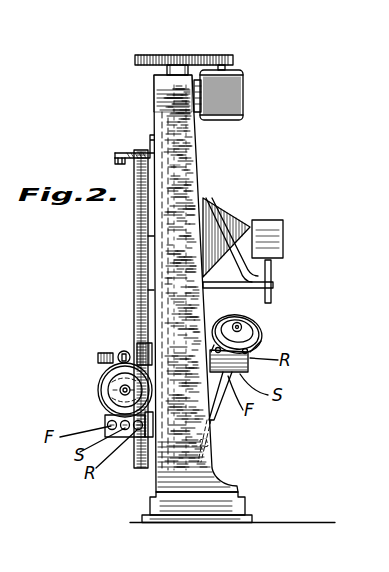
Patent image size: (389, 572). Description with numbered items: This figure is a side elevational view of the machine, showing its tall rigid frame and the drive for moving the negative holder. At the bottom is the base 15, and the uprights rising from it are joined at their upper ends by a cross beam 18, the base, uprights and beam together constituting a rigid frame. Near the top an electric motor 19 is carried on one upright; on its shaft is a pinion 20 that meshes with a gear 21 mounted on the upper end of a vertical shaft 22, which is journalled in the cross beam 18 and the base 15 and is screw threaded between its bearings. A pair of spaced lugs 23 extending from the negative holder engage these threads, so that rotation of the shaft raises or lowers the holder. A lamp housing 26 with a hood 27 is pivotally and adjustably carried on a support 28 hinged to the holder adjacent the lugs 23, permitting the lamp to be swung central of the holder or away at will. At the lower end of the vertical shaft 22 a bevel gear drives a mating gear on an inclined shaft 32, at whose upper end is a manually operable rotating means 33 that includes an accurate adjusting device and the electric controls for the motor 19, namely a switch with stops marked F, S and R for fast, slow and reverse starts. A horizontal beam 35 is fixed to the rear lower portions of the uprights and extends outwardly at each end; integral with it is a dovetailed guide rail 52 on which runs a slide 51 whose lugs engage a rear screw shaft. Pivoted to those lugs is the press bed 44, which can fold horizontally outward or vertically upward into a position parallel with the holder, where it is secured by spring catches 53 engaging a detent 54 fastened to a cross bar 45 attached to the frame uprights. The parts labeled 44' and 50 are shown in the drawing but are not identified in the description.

The base 15 is at (193, 506).
The cross beam 18 is at (166, 86).
The electric motor 19 is at (228, 93).
The pinion 20 is at (236, 58).
The gear 21 is at (140, 57).
The vertical shaft 22 is at (210, 443).
The spaced lugs 23 is at (176, 170).
The lamp housing 26 is at (270, 240).
The hood 27 is at (228, 226).
The support 28 is at (232, 288).
The inclined shaft 32 is at (215, 428).
The manually operable rotating means 33 is at (269, 345).
The horizontal beam 35 is at (148, 438).
The press bed 44 is at (120, 309).
The rack section 44' is at (121, 292).
The cross bar 45 is at (130, 152).
The guide 50 is at (152, 238).
The slide 51 is at (100, 386).
The dovetailed guide rail 52 is at (100, 400).
The spring catches 53 is at (116, 161).
The detent 54 is at (115, 154).